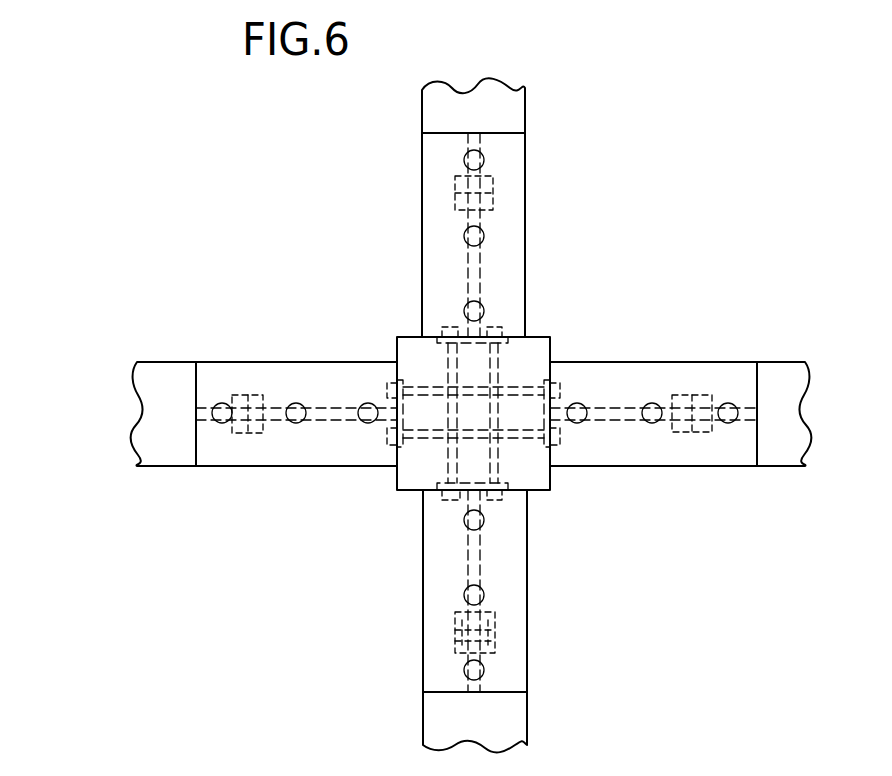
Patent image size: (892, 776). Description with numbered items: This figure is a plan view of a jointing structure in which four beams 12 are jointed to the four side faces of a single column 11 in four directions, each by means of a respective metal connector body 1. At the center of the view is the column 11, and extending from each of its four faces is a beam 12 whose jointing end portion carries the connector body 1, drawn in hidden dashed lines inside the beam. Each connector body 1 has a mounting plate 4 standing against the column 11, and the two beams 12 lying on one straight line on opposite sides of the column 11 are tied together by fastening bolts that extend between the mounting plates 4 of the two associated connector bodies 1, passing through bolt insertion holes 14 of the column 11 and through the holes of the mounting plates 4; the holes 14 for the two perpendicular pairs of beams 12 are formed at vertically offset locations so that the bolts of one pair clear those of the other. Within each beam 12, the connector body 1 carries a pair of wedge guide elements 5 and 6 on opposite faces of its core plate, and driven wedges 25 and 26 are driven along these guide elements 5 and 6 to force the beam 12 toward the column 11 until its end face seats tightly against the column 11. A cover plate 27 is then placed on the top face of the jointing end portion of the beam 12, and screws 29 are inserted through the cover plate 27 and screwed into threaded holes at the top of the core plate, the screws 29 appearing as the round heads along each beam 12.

The metal connector body 1 is at (487, 262).
The mounting plate 4 is at (425, 345).
The wedge guide element 5 is at (455, 650).
The wedge guide element 6 is at (500, 648).
The column 11 is at (555, 346).
The beam 12 is at (500, 105).
The bolt insertion hole 14 is at (455, 367).
The driven wedge 25 is at (455, 620).
The driven wedge 26 is at (495, 618).
The cover plate 27 is at (693, 447).
The screw 29 is at (580, 404).